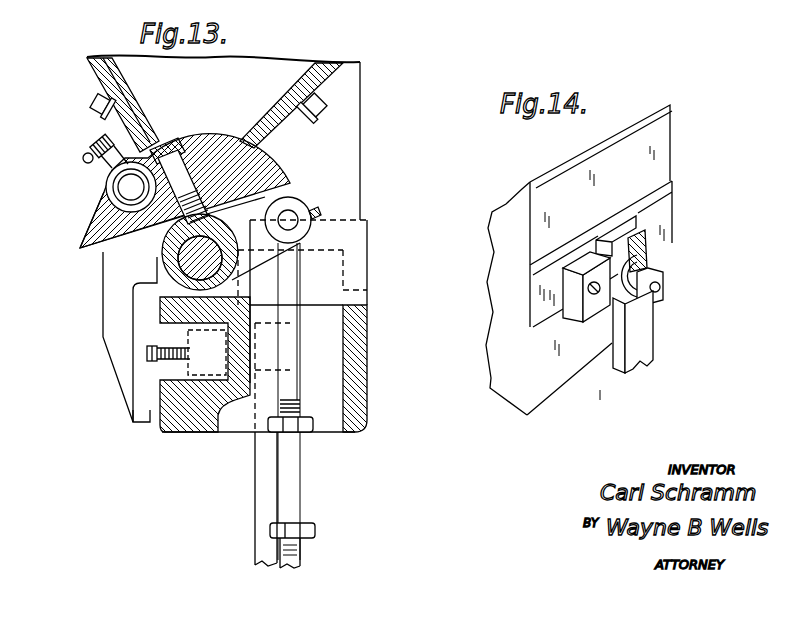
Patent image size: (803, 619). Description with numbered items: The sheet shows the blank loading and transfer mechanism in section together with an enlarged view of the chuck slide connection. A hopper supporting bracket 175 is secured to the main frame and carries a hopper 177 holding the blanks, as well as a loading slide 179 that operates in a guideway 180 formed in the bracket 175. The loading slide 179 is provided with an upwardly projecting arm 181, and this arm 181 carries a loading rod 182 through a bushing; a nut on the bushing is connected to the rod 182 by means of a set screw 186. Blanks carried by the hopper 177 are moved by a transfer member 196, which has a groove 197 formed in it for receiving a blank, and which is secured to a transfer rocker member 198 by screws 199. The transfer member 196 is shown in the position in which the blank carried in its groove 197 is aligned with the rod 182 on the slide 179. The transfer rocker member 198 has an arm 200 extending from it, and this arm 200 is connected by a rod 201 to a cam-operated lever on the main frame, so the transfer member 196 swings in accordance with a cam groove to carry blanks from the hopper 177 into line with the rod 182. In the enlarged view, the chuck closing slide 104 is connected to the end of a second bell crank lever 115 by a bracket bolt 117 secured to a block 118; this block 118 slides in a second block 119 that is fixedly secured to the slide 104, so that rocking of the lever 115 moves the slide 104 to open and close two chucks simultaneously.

In FIG. 14, the chuck closing slide 104 is at (665, 133).
In FIG. 14, the second bell crank lever 115 is at (653, 338).
In FIG. 14, the bracket bolt 117 is at (663, 287).
In FIG. 14, the block 118 is at (603, 305).
In FIG. 14, the second block 119 is at (582, 259).
In FIG. 13, the hopper supporting bracket 175 is at (368, 357).
In FIG. 13, the hopper 177 is at (316, 63).
In FIG. 13, the loading slide 179 is at (150, 424).
In FIG. 13, the guideway 180 is at (165, 380).
In FIG. 13, the upwardly projecting arm 181 is at (105, 303).
In FIG. 13, the loading rod 182 is at (118, 186).
In FIG. 13, the set screw 186 is at (93, 140).
In FIG. 13, the transfer member 196 is at (268, 166).
In FIG. 13, the groove 197 is at (98, 195).
In FIG. 13, the transfer rocker member 198 is at (158, 232).
In FIG. 13, the screws 199 is at (166, 148).
In FIG. 13, the arm 200 is at (268, 196).
In FIG. 13, the rod 201 is at (287, 397).